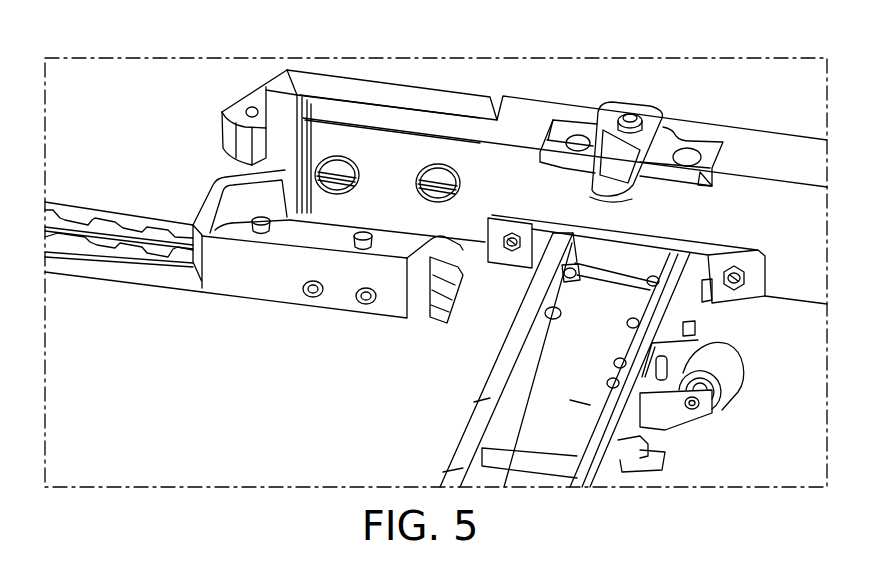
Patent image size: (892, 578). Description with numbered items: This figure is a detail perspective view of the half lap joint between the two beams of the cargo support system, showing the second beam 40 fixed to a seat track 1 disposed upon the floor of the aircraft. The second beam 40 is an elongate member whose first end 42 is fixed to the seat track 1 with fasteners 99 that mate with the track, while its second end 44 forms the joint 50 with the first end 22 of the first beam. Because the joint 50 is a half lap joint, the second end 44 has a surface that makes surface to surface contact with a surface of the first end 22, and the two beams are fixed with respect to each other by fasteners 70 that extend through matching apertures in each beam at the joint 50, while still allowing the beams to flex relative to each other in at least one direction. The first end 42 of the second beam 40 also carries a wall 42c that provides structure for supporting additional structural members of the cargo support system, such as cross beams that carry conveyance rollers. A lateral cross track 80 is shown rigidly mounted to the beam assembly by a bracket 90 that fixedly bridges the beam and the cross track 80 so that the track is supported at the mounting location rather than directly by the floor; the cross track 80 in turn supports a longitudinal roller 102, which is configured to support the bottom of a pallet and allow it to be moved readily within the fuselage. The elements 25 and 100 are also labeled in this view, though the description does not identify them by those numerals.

The seat track 1 is at (104, 280).
The first end 22 is at (396, 119).
The stop bracket 25 is at (367, 203).
The second beam 40 is at (217, 282).
The first end 42 is at (197, 218).
The wall 42c is at (271, 288).
The second end 44 is at (358, 92).
The joint 50 is at (442, 120).
The fastener 70 is at (334, 167).
The cross track 80 is at (493, 372).
The bracket 90 is at (503, 282).
The fastener 99 is at (256, 234).
The clamp 100 is at (661, 133).
The roller 102 is at (731, 373).